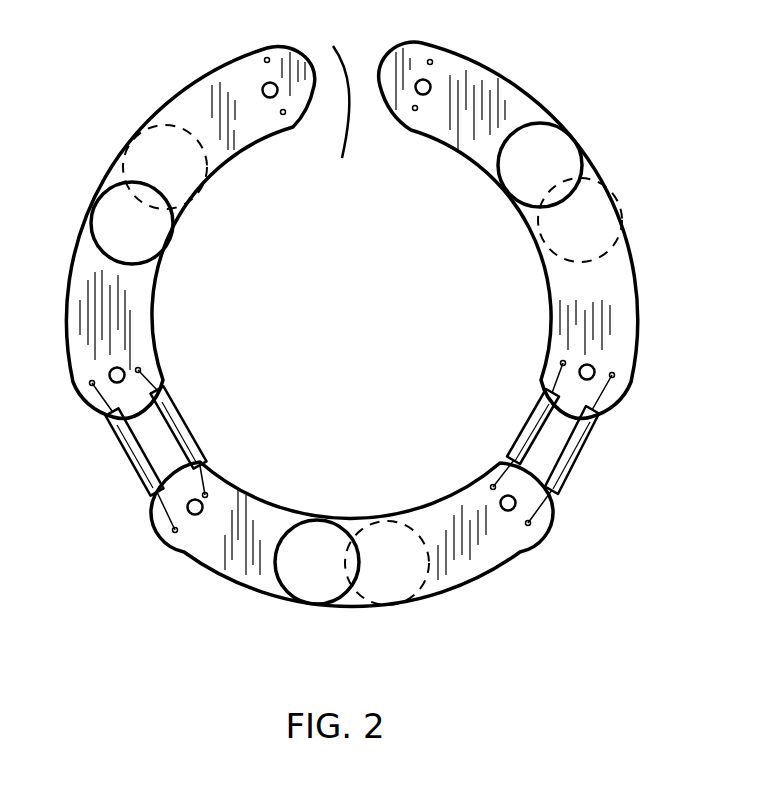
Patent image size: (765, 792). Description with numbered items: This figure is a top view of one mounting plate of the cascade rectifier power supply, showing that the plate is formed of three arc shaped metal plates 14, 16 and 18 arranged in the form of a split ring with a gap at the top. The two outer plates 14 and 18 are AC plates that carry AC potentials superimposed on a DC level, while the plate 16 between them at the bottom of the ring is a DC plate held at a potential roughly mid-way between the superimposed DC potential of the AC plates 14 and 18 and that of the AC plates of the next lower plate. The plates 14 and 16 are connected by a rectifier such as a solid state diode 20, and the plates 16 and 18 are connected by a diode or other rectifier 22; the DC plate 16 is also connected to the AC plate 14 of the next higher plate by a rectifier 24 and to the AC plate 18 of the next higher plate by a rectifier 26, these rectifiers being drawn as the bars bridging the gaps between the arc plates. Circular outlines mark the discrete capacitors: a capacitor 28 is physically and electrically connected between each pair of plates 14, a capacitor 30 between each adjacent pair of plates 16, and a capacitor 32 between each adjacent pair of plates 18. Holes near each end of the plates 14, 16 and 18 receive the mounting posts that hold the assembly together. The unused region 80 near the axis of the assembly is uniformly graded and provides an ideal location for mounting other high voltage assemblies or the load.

The arc shaped metal plate 14 is at (136, 299).
The arc shaped metal plate 16 is at (250, 512).
The arc shaped metal plate 18 is at (468, 152).
The solid state diode 20 is at (127, 452).
The rectifier 22 is at (587, 442).
The rectifier 24 is at (180, 422).
The rectifier 26 is at (522, 432).
The discrete capacitor 28 is at (118, 196).
The discrete capacitor 30 is at (313, 587).
The discrete capacitor 32 is at (567, 158).
The unused region 80 is at (334, 84).